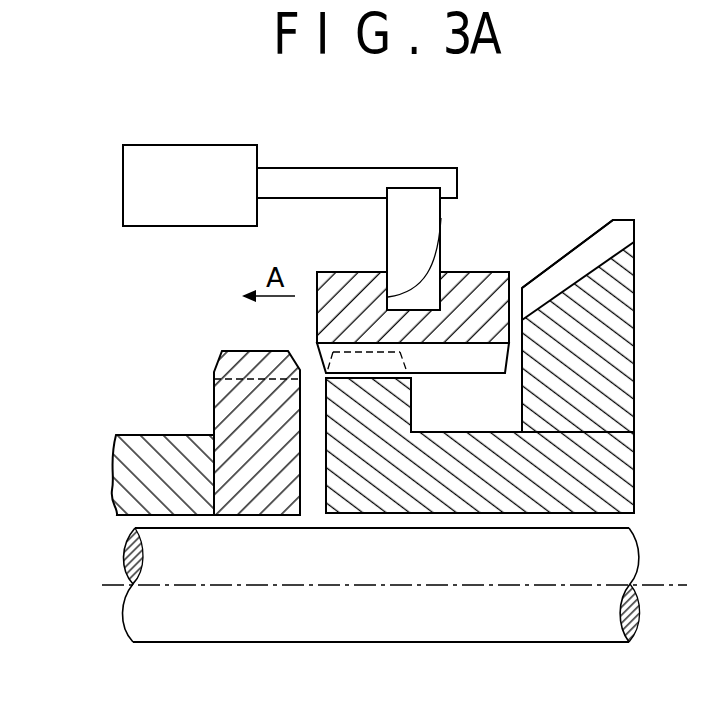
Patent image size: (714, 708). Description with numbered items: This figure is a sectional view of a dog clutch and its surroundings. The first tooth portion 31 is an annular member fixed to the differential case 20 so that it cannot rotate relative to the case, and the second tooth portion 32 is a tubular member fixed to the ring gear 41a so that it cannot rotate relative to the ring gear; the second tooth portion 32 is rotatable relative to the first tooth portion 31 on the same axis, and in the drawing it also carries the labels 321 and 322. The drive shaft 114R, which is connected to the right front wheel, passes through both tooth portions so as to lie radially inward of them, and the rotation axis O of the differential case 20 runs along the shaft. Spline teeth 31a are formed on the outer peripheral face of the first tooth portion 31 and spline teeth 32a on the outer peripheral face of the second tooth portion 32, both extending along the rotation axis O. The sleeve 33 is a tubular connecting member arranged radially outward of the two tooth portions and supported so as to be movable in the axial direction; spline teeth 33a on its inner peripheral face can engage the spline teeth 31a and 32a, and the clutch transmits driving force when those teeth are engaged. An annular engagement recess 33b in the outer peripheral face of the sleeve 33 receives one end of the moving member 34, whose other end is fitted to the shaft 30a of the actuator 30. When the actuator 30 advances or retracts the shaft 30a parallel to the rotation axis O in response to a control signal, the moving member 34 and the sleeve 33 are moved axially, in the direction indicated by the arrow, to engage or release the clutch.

The actuator 30 is at (290, 159).
The shaft 30a is at (320, 170).
The moving member 34 is at (461, 238).
The engagement recess 33b is at (441, 250).
The sleeve 33 is at (418, 331).
The spline teeth 33a is at (452, 363).
The ring gear 41a is at (632, 333).
The base portion of holding member 322 is at (635, 470).
The upright portion of holding member 321 is at (358, 432).
The second tooth portion 32 is at (478, 455).
The spline teeth 32a is at (324, 354).
The first tooth portion 31 is at (231, 414).
The spline teeth 31a is at (247, 365).
The differential case 20 is at (155, 436).
The drive shaft 114R is at (540, 630).
The rotation axis O is at (648, 583).